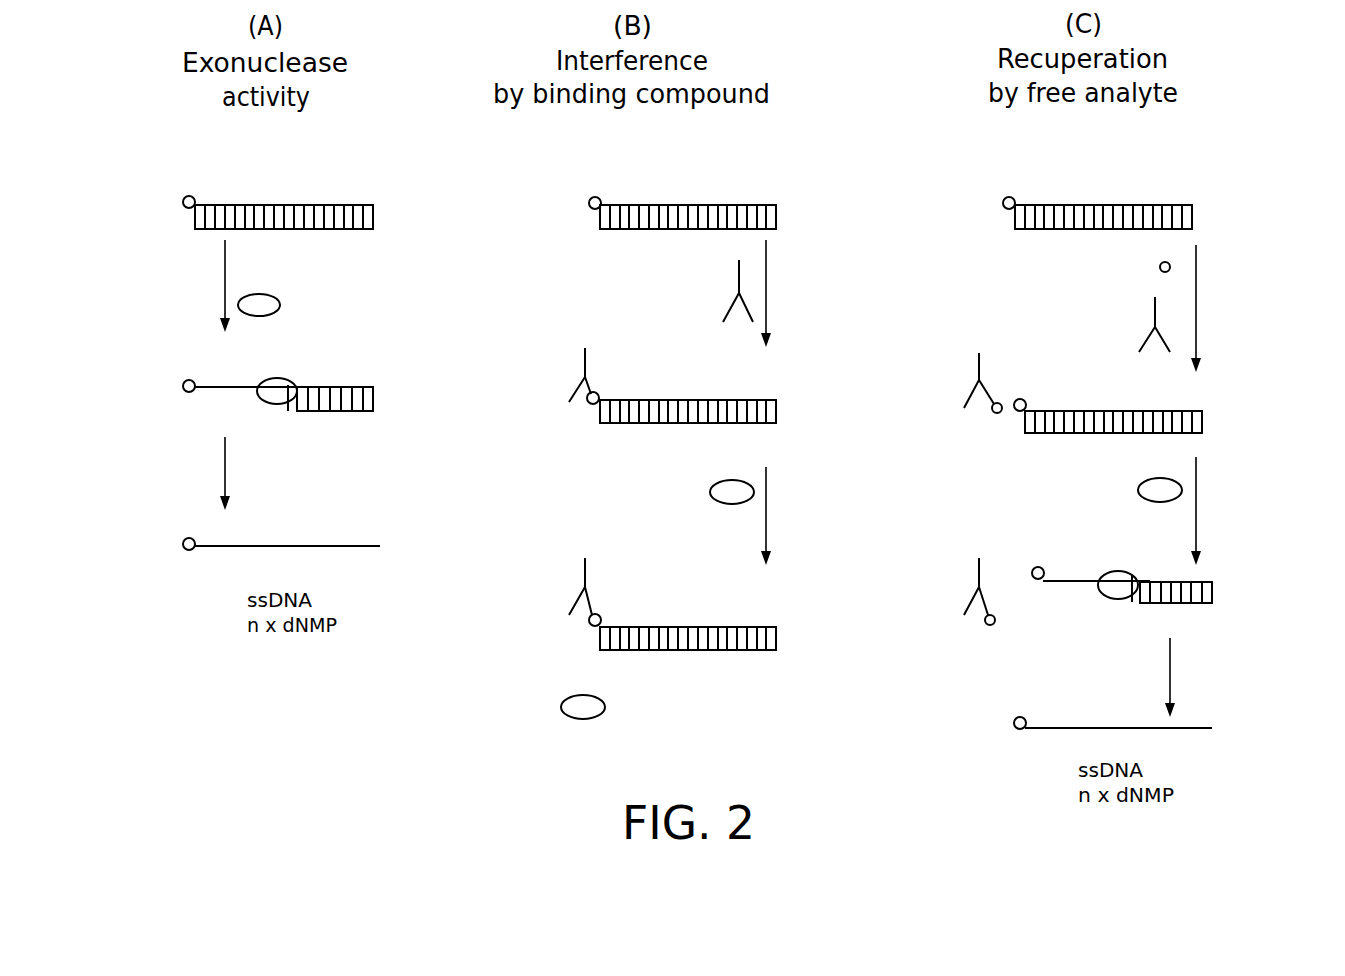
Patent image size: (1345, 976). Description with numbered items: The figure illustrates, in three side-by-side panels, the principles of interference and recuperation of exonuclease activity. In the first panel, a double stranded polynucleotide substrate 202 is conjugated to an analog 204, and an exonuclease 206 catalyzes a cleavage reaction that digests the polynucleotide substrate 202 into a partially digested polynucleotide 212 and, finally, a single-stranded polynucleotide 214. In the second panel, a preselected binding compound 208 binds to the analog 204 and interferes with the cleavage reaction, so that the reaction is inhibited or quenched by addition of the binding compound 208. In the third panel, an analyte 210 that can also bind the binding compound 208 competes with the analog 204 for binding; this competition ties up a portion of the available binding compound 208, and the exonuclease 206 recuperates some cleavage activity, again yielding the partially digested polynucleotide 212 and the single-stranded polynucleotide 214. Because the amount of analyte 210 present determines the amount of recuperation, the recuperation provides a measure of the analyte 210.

The polynucleotide substrate 202 is at (195, 226).
The analog 204 is at (197, 193).
The exonuclease 206 is at (275, 303).
The binding compound 208 is at (739, 262).
The analyte 210 is at (1158, 268).
The partially digested polynucleotide 212 is at (313, 411).
The single-stranded polynucleotide 214 is at (327, 546).